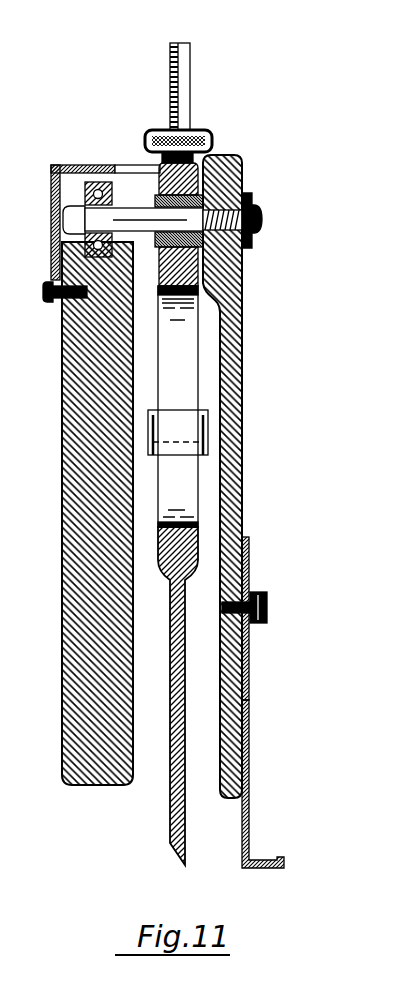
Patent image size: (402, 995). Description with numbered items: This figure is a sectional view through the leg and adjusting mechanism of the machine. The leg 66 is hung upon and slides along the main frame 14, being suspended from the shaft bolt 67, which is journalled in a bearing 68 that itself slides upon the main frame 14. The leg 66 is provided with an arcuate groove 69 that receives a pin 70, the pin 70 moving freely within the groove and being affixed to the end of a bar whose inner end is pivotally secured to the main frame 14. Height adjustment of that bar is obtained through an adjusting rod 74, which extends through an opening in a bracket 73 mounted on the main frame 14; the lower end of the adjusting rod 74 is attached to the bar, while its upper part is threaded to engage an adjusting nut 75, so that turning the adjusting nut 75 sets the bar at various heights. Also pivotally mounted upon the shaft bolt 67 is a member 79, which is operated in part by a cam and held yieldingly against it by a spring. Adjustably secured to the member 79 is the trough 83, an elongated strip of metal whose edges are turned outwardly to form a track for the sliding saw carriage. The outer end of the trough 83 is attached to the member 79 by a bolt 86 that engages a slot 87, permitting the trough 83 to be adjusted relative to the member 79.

The main frame 14 is at (72, 435).
The leg 66 is at (170, 808).
The shaft bolt 67 is at (128, 220).
The bearing 68 is at (87, 182).
The arcuate groove 69 is at (182, 348).
The pin 70 is at (180, 422).
The bracket 73 is at (52, 228).
The adjusting rod 74 is at (190, 67).
The adjusting nut 75 is at (208, 132).
The member 79 is at (235, 452).
The trough 83 is at (250, 763).
The bolt 86 is at (265, 595).
The slot 87 is at (247, 670).